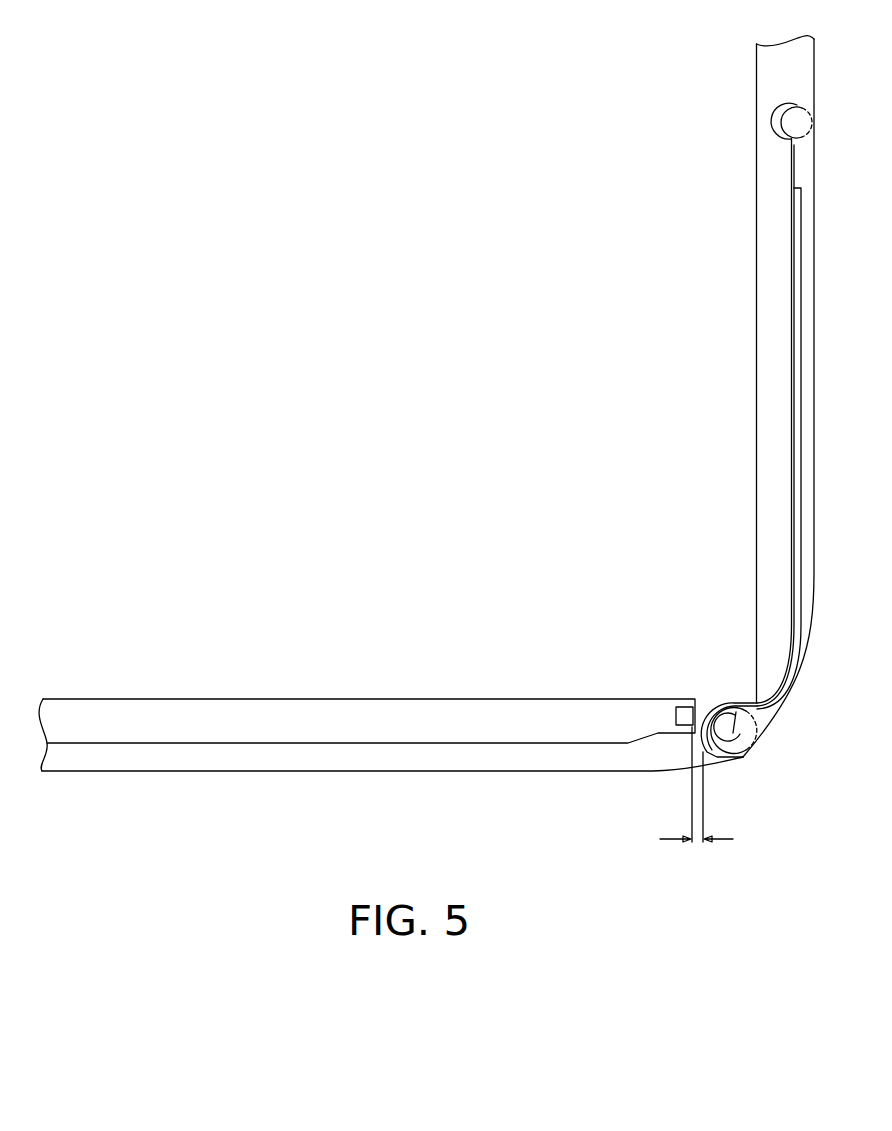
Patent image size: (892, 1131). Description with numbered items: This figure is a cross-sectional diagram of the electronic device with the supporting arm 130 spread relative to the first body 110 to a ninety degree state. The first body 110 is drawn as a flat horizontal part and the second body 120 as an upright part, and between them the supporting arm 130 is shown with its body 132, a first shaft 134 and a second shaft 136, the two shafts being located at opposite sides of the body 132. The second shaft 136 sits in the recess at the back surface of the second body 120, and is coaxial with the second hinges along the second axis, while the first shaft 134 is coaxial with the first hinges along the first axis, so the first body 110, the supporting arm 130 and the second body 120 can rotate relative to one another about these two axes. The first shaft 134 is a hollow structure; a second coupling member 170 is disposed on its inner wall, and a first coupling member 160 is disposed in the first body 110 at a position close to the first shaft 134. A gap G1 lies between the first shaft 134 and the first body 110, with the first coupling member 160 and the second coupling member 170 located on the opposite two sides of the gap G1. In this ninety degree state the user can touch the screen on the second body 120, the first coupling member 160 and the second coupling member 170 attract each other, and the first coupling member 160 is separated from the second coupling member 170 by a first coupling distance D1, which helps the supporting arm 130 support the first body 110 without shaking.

The first body 110 is at (432, 720).
The second body 120 is at (780, 67).
The supporting arm 130 is at (689, 417).
The body 132 is at (808, 356).
The first shaft 134 is at (690, 696).
The second shaft 136 is at (800, 124).
The first coupling member 160 is at (683, 726).
The second coupling member 170 is at (728, 756).
The gap G1 is at (707, 704).
The first coupling distance D1 is at (696, 800).